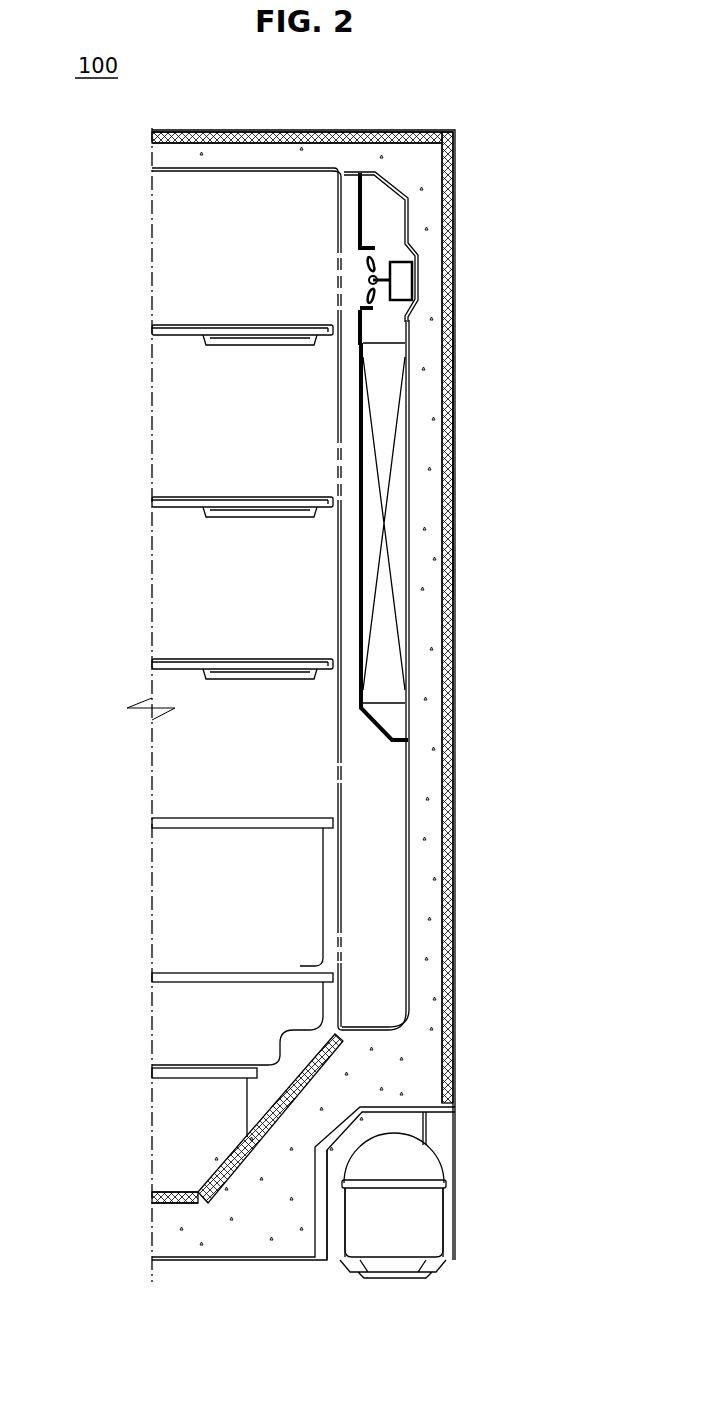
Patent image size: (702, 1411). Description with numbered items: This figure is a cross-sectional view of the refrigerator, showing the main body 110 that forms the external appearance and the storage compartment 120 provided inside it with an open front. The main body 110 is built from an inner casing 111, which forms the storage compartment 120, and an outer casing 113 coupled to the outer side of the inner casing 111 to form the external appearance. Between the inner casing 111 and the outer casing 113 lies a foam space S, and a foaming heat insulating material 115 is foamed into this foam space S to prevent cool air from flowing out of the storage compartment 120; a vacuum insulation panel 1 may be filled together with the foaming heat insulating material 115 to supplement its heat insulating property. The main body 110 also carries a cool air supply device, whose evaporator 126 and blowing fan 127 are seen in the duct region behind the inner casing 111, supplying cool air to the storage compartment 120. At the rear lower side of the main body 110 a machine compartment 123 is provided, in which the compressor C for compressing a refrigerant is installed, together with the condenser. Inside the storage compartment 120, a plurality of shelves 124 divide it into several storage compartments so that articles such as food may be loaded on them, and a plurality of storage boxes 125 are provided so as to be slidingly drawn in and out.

The main body 110 is at (455, 130).
The inner casing 111 is at (278, 168).
The outer casing 113 is at (455, 440).
The foaming heat insulating material 115 is at (425, 510).
The storage compartment 120 is at (293, 450).
The machine compartment 123 is at (403, 1122).
The shelves 124 is at (183, 325).
The storage boxes 125 is at (188, 903).
The evaporator 126 is at (392, 360).
The blowing fan 127 is at (405, 277).
The vacuum insulation panel 1 is at (456, 401).
The foam space S is at (420, 608).
The compressor C is at (430, 1215).